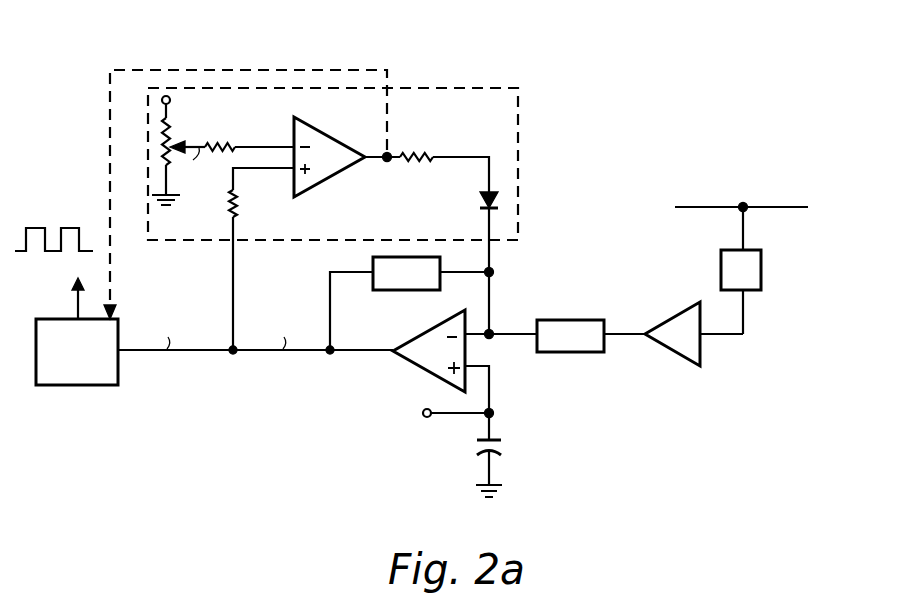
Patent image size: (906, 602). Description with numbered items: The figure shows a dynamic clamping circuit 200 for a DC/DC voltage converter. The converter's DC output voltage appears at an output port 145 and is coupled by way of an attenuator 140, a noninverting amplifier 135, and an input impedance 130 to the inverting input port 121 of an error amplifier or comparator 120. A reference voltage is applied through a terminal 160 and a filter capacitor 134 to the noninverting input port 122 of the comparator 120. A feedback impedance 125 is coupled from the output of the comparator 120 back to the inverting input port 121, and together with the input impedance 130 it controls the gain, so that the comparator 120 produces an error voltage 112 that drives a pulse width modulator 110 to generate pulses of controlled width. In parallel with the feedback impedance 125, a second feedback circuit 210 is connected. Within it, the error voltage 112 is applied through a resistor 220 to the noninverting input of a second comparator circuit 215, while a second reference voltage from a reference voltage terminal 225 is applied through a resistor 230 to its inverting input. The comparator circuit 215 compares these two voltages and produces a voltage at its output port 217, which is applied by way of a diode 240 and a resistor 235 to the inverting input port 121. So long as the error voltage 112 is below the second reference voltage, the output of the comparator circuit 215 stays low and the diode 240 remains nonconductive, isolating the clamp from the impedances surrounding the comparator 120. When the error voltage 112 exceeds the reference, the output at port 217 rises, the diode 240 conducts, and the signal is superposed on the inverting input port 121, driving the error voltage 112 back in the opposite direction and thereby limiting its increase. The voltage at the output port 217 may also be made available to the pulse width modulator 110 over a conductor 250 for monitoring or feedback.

The dynamic clamping circuit 200 is at (428, 39).
The pulse width modulator 110 is at (80, 386).
The error voltage 112 is at (196, 353).
The comparator 120 is at (392, 356).
The inverting input port 121 is at (481, 340).
The noninverting input port 122 is at (481, 372).
The feedback impedance 125 is at (373, 268).
The input impedance 130 is at (566, 320).
The filter capacitor 134 is at (497, 448).
The noninverting amplifier 135 is at (663, 318).
The attenuator 140 is at (762, 270).
The output port 145 is at (747, 210).
The terminal 160 is at (423, 416).
The circuit 210 is at (518, 128).
The second comparator circuit 215 is at (329, 191).
The output port 217 is at (386, 155).
The resistor 220 is at (240, 206).
The reference voltage terminal 225 is at (175, 145).
The resistor 230 is at (238, 146).
The resistor 235 is at (436, 150).
The diode 240 is at (500, 200).
The conductor 250 is at (318, 62).